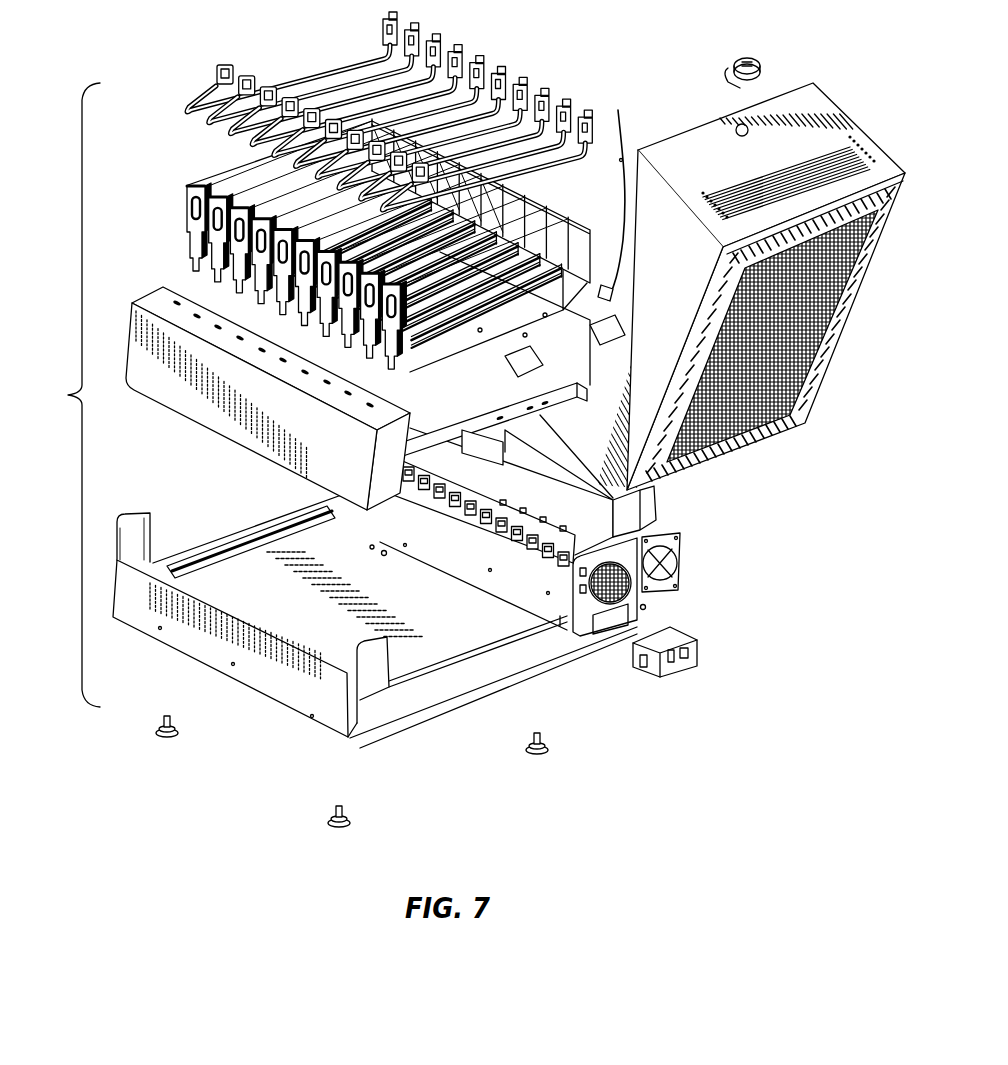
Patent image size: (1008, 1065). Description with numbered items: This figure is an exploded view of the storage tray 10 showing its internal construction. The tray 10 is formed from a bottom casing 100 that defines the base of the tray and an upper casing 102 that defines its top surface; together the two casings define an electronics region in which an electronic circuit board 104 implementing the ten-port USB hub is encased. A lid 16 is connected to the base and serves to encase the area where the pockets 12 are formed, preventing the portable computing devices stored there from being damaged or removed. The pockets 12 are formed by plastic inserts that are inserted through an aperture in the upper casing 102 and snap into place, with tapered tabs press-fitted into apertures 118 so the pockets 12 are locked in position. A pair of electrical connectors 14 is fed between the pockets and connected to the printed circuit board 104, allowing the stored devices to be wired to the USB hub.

The storage tray 10 is at (67, 395).
The pockets 12 is at (333, 232).
The electrical connectors 14 is at (333, 125).
The lid 16 is at (797, 100).
The bottom casing 100 is at (375, 707).
The upper casing 102 is at (237, 393).
The electronic circuit board 104 is at (540, 528).
The apertures 118 is at (633, 195).